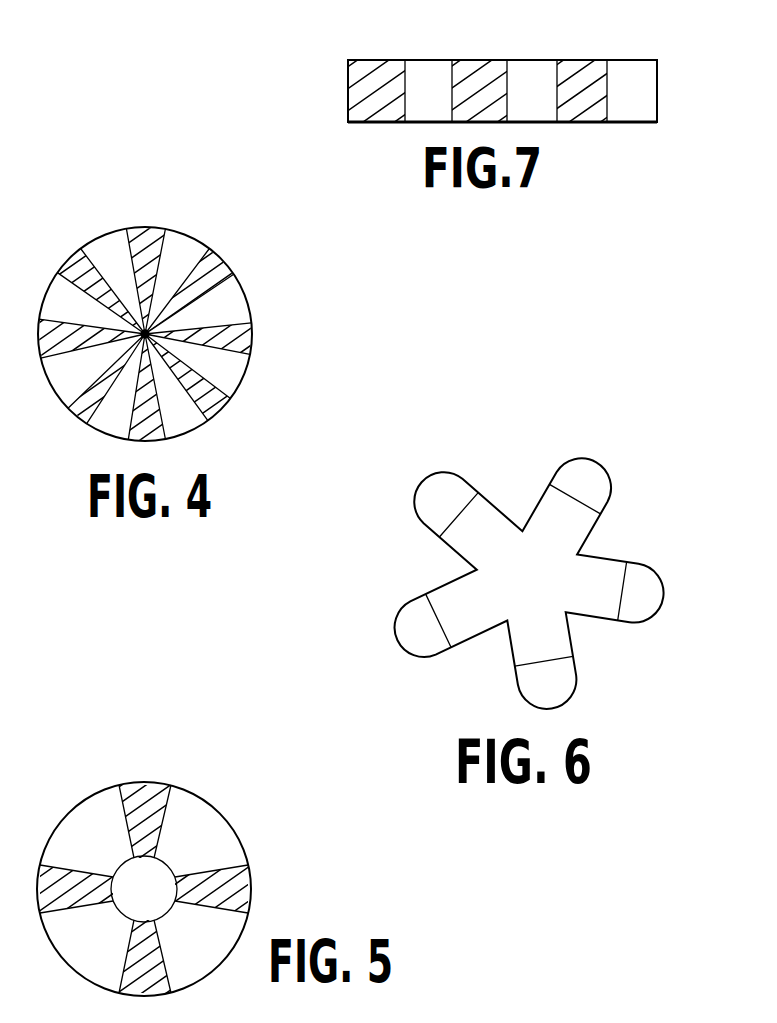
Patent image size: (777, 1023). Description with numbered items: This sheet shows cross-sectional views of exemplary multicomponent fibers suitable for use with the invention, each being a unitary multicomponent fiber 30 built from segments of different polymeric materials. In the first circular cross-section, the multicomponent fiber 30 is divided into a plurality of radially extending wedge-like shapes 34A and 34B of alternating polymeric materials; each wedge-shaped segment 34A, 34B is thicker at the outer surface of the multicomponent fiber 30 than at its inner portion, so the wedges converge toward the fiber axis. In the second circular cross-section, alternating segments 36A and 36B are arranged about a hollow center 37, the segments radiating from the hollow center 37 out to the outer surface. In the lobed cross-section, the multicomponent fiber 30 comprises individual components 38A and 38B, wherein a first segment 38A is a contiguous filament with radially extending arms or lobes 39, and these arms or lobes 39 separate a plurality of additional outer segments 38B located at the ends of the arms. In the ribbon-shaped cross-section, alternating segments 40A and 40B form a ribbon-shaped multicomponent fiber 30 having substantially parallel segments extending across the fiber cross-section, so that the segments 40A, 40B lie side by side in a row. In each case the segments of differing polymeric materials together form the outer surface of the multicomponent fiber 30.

In FIG. 4, the multicomponent fiber 30 is at (295, 356).
In FIG. 5, the multicomponent fiber 30 is at (168, 868).
In FIG. 6, the multicomponent fiber 30 is at (514, 579).
In FIG. 4, the wedge-shaped segment 34A is at (188, 235).
In FIG. 4, the wedge-shaped segment 34B is at (143, 227).
In FIG. 5, the alternating segment 36A is at (217, 803).
In FIG. 5, the alternating segment 36B is at (145, 780).
In FIG. 5, the hollow center 37 is at (157, 903).
In FIG. 6, the first segment 38A is at (589, 531).
In FIG. 6, the outer segment 38B is at (607, 474).
In FIG. 6, the radially extending arm or lobe 39 is at (590, 618).
In FIG. 7, the alternating segment 40A is at (388, 60).
In FIG. 7, the alternating segment 40B is at (428, 60).